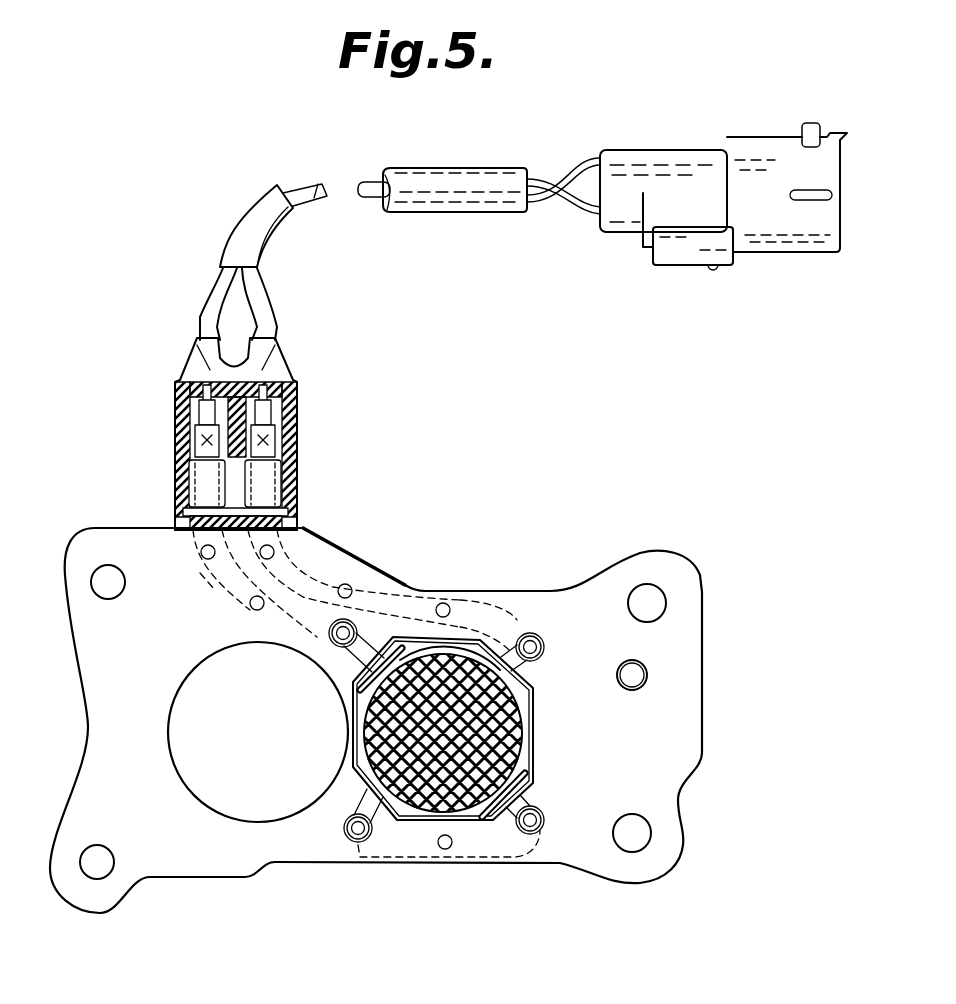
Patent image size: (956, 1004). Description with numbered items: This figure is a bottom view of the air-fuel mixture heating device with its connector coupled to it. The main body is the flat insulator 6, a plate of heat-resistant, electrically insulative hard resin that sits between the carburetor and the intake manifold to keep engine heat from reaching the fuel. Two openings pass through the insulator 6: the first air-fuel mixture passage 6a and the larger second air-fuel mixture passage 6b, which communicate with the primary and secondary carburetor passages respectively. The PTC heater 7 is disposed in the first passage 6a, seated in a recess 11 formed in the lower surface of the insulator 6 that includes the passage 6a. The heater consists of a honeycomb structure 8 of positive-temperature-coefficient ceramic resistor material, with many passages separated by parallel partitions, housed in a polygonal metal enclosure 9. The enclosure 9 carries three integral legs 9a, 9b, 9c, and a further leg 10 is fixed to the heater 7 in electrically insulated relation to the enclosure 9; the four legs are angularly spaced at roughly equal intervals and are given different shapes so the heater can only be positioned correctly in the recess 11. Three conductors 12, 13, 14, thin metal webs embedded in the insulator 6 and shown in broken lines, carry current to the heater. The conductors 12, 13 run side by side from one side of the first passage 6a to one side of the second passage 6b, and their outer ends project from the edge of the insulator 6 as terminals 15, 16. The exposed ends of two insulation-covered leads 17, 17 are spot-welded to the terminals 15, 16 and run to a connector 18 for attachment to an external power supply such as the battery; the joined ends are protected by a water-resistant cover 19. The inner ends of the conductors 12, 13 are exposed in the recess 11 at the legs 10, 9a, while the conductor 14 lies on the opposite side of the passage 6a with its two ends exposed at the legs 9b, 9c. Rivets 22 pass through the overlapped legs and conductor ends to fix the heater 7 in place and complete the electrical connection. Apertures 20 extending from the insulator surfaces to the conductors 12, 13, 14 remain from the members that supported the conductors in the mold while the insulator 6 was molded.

The insulator 6 is at (566, 541).
The first air-fuel mixture passage 6a is at (510, 703).
The second air-fuel mixture passage 6b is at (205, 690).
The PTC heater 7 is at (532, 758).
The honeycomb structure 8 is at (473, 790).
The enclosure 9 is at (534, 731).
The leg 9a is at (528, 636).
The leg 9b is at (531, 795).
The leg 9c is at (365, 808).
The leg 10 is at (342, 665).
The recess 11 is at (460, 645).
The conductor 12 is at (237, 580).
The conductor 13 is at (378, 603).
The conductor 14 is at (418, 852).
The terminal 15 is at (190, 447).
The terminal 16 is at (268, 455).
The lead 17 is at (208, 320).
The connector 18 is at (660, 163).
The water-resistant cover 19 is at (306, 384).
The aperture 20 is at (201, 552).
The rivet 22 is at (333, 642).